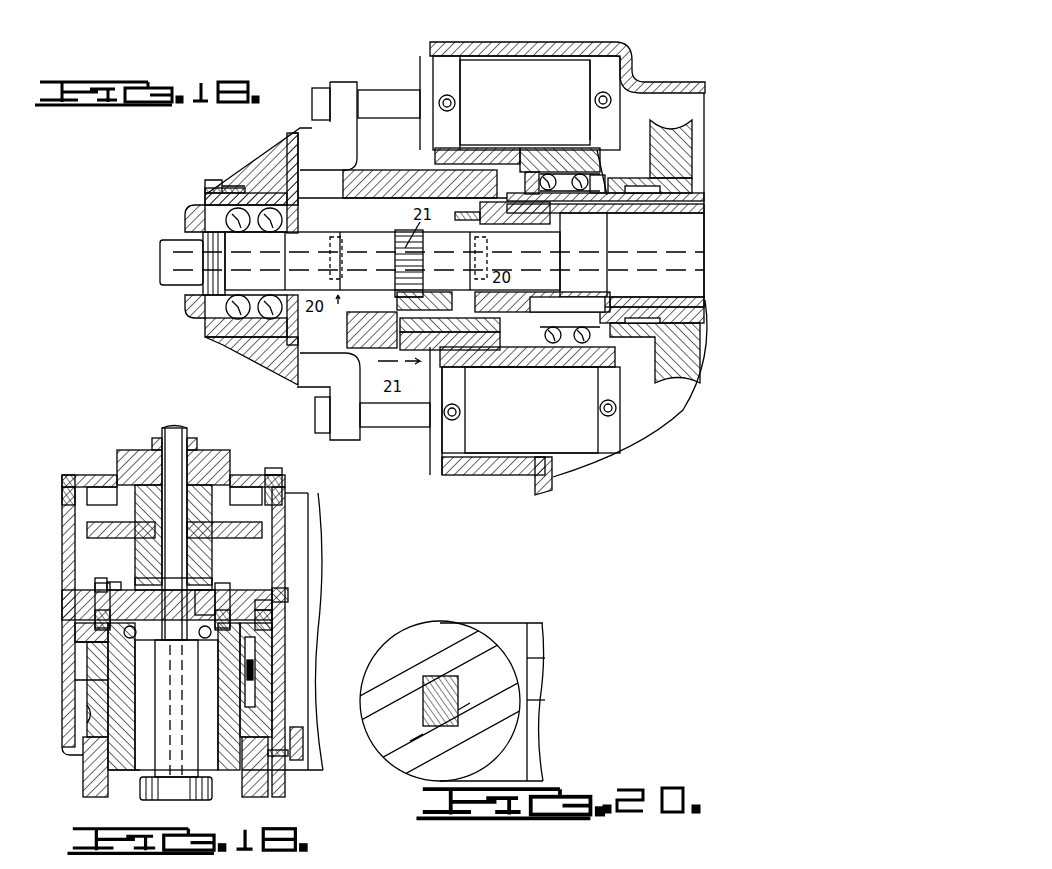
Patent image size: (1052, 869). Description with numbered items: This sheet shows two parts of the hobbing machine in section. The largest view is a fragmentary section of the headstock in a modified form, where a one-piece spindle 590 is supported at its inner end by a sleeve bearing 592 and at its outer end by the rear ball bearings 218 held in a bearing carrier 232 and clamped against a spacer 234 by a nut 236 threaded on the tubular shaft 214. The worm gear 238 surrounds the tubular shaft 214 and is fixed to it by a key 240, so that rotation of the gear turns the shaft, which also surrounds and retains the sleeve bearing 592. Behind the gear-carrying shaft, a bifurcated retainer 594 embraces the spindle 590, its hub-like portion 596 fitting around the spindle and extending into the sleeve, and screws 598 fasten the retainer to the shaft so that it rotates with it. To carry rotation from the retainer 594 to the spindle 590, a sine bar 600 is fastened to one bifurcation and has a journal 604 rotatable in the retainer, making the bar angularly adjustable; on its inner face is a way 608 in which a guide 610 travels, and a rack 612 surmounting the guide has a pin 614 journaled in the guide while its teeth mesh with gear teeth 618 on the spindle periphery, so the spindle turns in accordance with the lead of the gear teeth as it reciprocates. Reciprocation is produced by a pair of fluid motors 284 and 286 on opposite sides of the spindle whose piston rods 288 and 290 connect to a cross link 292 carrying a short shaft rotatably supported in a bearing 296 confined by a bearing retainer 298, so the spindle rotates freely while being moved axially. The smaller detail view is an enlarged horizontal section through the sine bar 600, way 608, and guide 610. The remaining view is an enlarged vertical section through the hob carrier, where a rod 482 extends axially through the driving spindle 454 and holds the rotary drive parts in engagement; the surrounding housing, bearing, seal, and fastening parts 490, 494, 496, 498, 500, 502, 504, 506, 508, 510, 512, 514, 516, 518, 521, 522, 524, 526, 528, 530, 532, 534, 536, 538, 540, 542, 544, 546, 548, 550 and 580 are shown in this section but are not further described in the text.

In FIG. 19, the fluid motor 284 is at (508, 44).
In FIG. 19, the piston rod 288 is at (381, 90).
In FIG. 19, the cross link 292 is at (298, 148).
In FIG. 19, the bearing 296 is at (260, 192).
In FIG. 19, the bearing retainer 298 is at (190, 215).
In FIG. 19, the piston rod 290 is at (380, 427).
In FIG. 19, the bifurcated retainer 594 is at (378, 172).
In FIG. 19, the nut 236 is at (530, 178).
In FIG. 19, the rear bearings 218 is at (577, 173).
In FIG. 19, the bearing carrier 232 is at (594, 168).
In FIG. 19, the spacer 234 is at (592, 186).
In FIG. 19, the worm gear 238 is at (682, 165).
In FIG. 19, the key 240 is at (664, 187).
In FIG. 19, the tubular shaft 214 is at (703, 206).
In FIG. 19, the spindle 590 is at (700, 229).
In FIG. 19, the hub-like portion 596 is at (532, 226).
In FIG. 19, the screws 598 is at (537, 297).
In FIG. 19, the sleeve bearing 592 is at (706, 306).
In FIG. 19, the gear teeth 618 is at (426, 266).
In FIG. 19, the rack 612 is at (426, 289).
In FIG. 19, the pin 614 is at (410, 306).
In FIG. 19, the guide 610 is at (350, 335).
In FIG. 20, the guide 610 is at (465, 700).
In FIG. 19, the way 608 is at (420, 330).
In FIG. 20, the way 608 is at (478, 661).
In FIG. 19, the journal 604 is at (422, 350).
In FIG. 19, the sine bar 600 is at (527, 347).
In FIG. 20, the sine bar 600 is at (492, 738).
In FIG. 19, the fluid motor 286 is at (472, 475).
In FIG. 18, the rod 482 is at (188, 436).
In FIG. 18, the collar 548 is at (150, 450).
In FIG. 18, the upper hub 542 is at (230, 468).
In FIG. 18, the top plate 546 is at (128, 498).
In FIG. 18, the top plate right 536 is at (252, 486).
In FIG. 18, the bolt 538 is at (282, 488).
In FIG. 18, the housing 490 is at (63, 558).
In FIG. 18, the left flange 550 is at (130, 522).
In FIG. 18, the right flange 540 is at (220, 523).
In FIG. 18, the side plate 544 is at (285, 526).
In FIG. 18, the side wall 532 is at (288, 546).
In FIG. 18, the hub base 516 is at (148, 576).
In FIG. 18, the retainer 528 is at (205, 575).
In FIG. 18, the ball 504 is at (215, 583).
In FIG. 18, the ball seat 506 is at (232, 590).
In FIG. 18, the seal 512 is at (125, 580).
In FIG. 18, the seal ring 514 is at (120, 585).
In FIG. 18, the bearing plate 534 is at (75, 595).
In FIG. 18, the bolt 508 is at (76, 615).
In FIG. 18, the nut 510 is at (76, 630).
In FIG. 18, the bearing block top 496 is at (82, 645).
In FIG. 18, the bearing block 498 is at (85, 660).
In FIG. 18, the bore step 502 is at (88, 680).
In FIG. 18, the inner block 500 is at (88, 700).
In FIG. 18, the passage 580 is at (86, 714).
In FIG. 18, the base block 494 is at (72, 745).
In FIG. 18, the bore 518 is at (203, 700).
In FIG. 18, the spindle 454 is at (150, 772).
In FIG. 18, the bolt head 522 is at (290, 604).
In FIG. 18, the washer 521 is at (286, 615).
In FIG. 18, the nut 526 is at (283, 632).
In FIG. 18, the pin 524 is at (275, 688).
In FIG. 18, the spring pin 530 is at (256, 683).